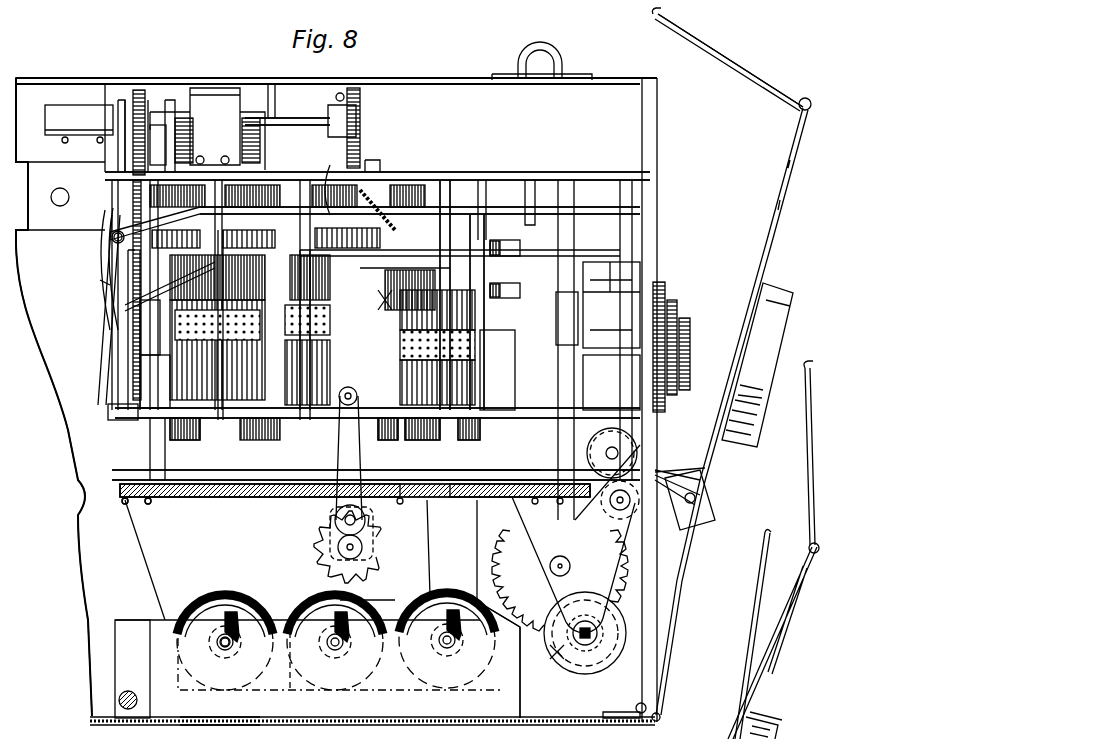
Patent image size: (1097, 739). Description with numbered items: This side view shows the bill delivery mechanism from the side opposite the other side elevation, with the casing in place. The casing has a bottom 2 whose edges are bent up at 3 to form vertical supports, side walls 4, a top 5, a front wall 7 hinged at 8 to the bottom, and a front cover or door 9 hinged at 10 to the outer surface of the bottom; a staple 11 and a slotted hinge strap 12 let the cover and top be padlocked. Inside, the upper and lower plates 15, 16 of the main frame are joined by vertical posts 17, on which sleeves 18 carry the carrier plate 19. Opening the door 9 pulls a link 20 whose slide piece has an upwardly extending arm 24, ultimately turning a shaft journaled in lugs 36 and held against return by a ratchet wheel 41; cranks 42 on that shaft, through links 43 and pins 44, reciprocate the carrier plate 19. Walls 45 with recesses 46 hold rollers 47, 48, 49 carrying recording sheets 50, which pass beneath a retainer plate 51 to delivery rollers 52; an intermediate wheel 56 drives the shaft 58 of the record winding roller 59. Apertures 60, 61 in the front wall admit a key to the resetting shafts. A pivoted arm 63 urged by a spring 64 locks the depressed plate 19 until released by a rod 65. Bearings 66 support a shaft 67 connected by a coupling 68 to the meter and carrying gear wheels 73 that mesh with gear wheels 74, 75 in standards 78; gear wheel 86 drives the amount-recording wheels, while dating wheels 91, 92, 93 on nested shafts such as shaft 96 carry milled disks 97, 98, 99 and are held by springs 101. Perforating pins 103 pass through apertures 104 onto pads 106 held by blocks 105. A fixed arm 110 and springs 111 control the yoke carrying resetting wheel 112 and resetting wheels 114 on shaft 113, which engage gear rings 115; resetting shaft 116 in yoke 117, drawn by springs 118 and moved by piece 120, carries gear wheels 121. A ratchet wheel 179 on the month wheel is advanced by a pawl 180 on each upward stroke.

The bottom 2 is at (222, 726).
The bent-up edges 3 is at (125, 642).
The side walls 4 is at (90, 582).
The top 5 is at (602, 82).
The front wall 7 is at (648, 118).
The hinge 8 is at (636, 706).
The front cover or door 9 is at (770, 245).
The hinge 10 is at (661, 718).
The staple 11 is at (550, 52).
The slotted hinge strap 12 is at (740, 72).
The upper plate 15 is at (632, 178).
The lower plate 16 is at (112, 482).
The vertical posts 17 is at (575, 200).
The sleeves 18 is at (145, 385).
The carrier plate 19 is at (118, 418).
The link 20 is at (690, 545).
The upwardly extending arm 24 is at (452, 550).
The lugs 36 is at (322, 540).
The ratchet wheel 41 is at (383, 560).
The cranks 42 is at (376, 535).
The links 43 is at (334, 514).
The pins 44 is at (336, 420).
The walls 45 is at (286, 625).
The recesses 46 is at (220, 650).
The roller 47 is at (238, 652).
The roller 48 is at (338, 652).
The roller 49 is at (450, 650).
The recording sheets 50 is at (160, 585).
The retainer plate 51 is at (476, 470).
The delivery rollers 52 is at (638, 452).
The intermediate wheel 56 is at (540, 560).
The shaft 58 is at (578, 650).
The record winding roller 59 is at (544, 657).
The aperture 60 is at (598, 262).
The aperture 61 is at (560, 312).
The pivoted arm 63 is at (108, 305).
The spring 64 is at (100, 232).
The rod 65 is at (528, 205).
The bearings 66 is at (128, 142).
The shaft 67 is at (312, 118).
The coupling 68 is at (80, 110).
The gear wheels 73 is at (140, 90).
The gear wheel 74 is at (110, 275).
The gear wheel 75 is at (365, 190).
The standards 78 is at (400, 182).
The gear wheel 86 is at (385, 302).
The dating wheel 91 is at (300, 425).
The dating wheel 92 is at (356, 420).
The dating wheel 93 is at (424, 425).
The nested shaft 96 is at (611, 382).
The milled disk 97 is at (690, 334).
The milled disk 98 is at (674, 304).
The milled disk 99 is at (662, 284).
The springs 101 is at (388, 428).
The perforating pins 103 is at (178, 440).
The apertures 104 is at (504, 484).
The blocks 105 is at (200, 500).
The pads 106 is at (118, 502).
The fixed arm 110 is at (205, 115).
The springs 111 is at (248, 112).
The resetting wheel 112 is at (153, 158).
The resetting shaft 113 is at (522, 250).
The resetting wheels 114 is at (330, 215).
The gear rings 115 is at (220, 422).
The resetting shaft 116 is at (512, 299).
The yoke 117 is at (487, 262).
The springs 118 is at (452, 190).
The piece 120 is at (422, 208).
The gear wheels 121 is at (405, 262).
The ratchet wheel 179 is at (517, 375).
The pawl 180 is at (484, 205).